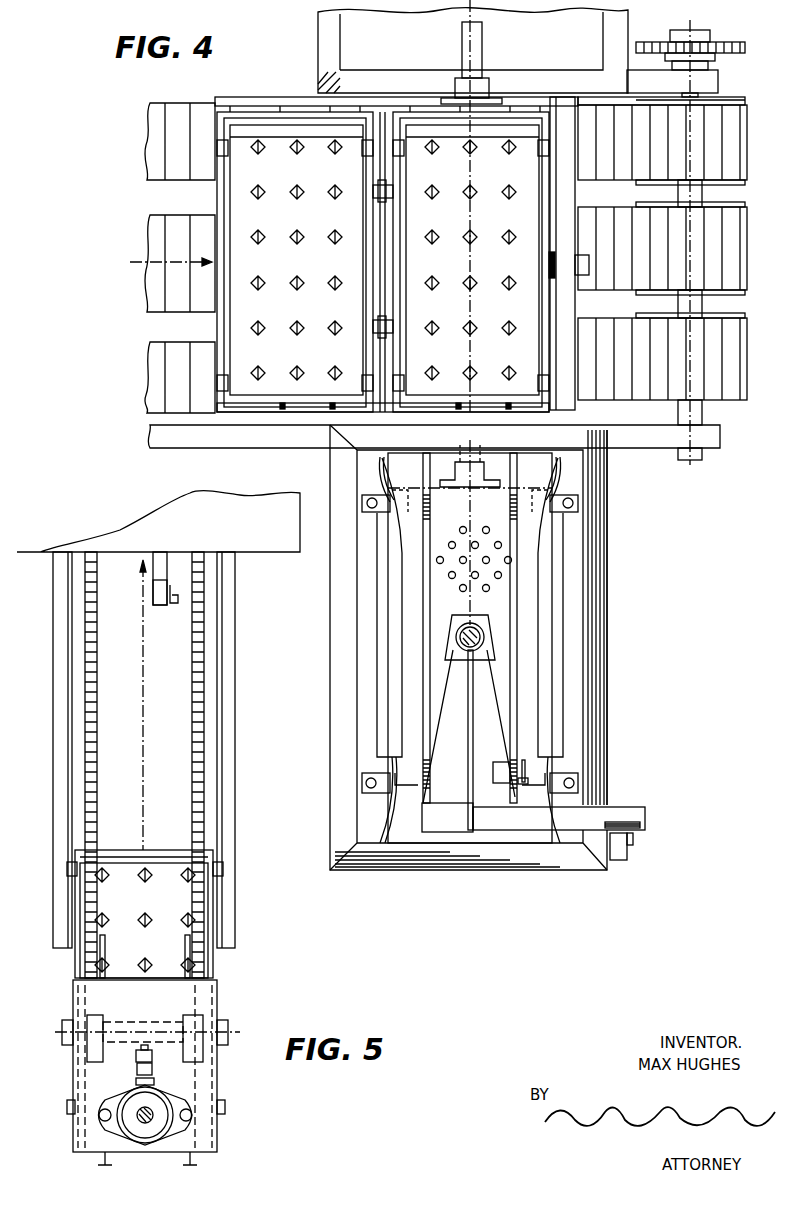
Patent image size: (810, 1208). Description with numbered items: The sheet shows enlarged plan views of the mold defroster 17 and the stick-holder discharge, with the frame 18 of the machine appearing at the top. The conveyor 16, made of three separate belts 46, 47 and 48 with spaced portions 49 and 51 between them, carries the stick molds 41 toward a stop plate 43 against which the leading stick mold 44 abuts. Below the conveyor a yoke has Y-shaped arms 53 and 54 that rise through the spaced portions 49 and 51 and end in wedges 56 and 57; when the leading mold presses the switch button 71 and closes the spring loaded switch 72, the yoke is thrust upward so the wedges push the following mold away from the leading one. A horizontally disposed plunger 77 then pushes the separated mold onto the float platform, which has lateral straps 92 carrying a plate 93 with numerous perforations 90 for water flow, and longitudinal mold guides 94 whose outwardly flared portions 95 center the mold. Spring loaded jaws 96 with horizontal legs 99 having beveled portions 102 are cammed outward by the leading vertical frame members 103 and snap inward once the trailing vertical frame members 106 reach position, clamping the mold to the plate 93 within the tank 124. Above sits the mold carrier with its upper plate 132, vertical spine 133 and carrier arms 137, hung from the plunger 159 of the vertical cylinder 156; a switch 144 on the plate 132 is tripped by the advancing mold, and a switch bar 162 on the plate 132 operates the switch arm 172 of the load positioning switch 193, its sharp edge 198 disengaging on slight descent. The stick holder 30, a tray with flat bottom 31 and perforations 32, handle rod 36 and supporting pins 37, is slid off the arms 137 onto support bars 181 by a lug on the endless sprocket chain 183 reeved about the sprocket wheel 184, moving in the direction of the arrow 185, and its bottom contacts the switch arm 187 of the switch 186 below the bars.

In FIG. 4, the conveyor 16 is at (733, 107).
In FIG. 5, the mold defroster 17 is at (672, 531).
In FIG. 4, the support block 18 is at (473, 50).
In FIG. 5, the support block 18 is at (158, 521).
In FIG. 5, the plate frame 30 is at (124, 848).
In FIG. 4, the flat bottom 31 is at (384, 260).
In FIG. 5, the flat bottom 31 is at (144, 920).
In FIG. 4, the perforations 32 is at (332, 190).
In FIG. 5, the transverse rod 36 is at (178, 856).
In FIG. 4, the mold supporting pin 37 is at (362, 372).
In FIG. 5, the mold supporting pin 37 is at (66, 868).
In FIG. 4, the stick molds 41 is at (217, 330).
In FIG. 4, the stop plate 43 is at (564, 253).
In FIG. 4, the leading stick mold 44 is at (518, 104).
In FIG. 4, the belt 46 is at (745, 148).
In FIG. 4, the belt 47 is at (745, 256).
In FIG. 4, the belt 48 is at (745, 378).
In FIG. 4, the spaced portion 49 is at (671, 193).
In FIG. 4, the spaced portion 51 is at (672, 314).
In FIG. 4, the Y-shaped arm 53 is at (372, 324).
In FIG. 4, the Y-shaped arm 54 is at (372, 198).
In FIG. 4, the wedge 56 is at (388, 320).
In FIG. 4, the wedge 57 is at (388, 192).
In FIG. 4, the switch button 71 is at (572, 252).
In FIG. 4, the spring loaded switch 72 is at (567, 254).
In FIG. 4, the plunger 77 is at (480, 60).
In FIG. 5, the perforations 90 is at (486, 526).
In FIG. 5, the lateral straps 92 is at (578, 508).
In FIG. 5, the plate 93 is at (469, 481).
In FIG. 5, the longitudinal mold guides 94 is at (362, 504).
In FIG. 5, the outwardly flared portion 95 is at (380, 462).
In FIG. 5, the spring loaded jaws 96 is at (375, 662).
In FIG. 5, the horizontal jaw leg 99 is at (377, 588).
In FIG. 5, the beveled portion 102 is at (386, 548).
In FIG. 5, the leading vertical frame members 103 is at (398, 785).
In FIG. 5, the trailing vertical frame members 106 is at (410, 498).
In FIG. 5, the tank 124 is at (610, 680).
In FIG. 5, the upper plate 132 is at (458, 783).
In FIG. 5, the vertical spine 133 is at (472, 737).
In FIG. 5, the carrier arms 137 is at (150, 940).
In FIG. 5, the switch 144 is at (502, 762).
In FIG. 5, the cylinder 156 is at (160, 1095).
In FIG. 5, the plunger 159 is at (478, 622).
In FIG. 5, the switch bar 162 is at (597, 806).
In FIG. 5, the switch arm 172 is at (635, 842).
In FIG. 5, the support bars 181 is at (52, 757).
In FIG. 5, the endless sprocket chain 183 is at (192, 728).
In FIG. 5, the sprocket wheel 184 is at (182, 1015).
In FIG. 5, the arrow 185 is at (150, 824).
In FIG. 5, the switch 186 is at (153, 605).
In FIG. 5, the switch arm 187 is at (176, 604).
In FIG. 5, the load positioning switch 193 is at (622, 860).
In FIG. 5, the sharp edge 198 is at (642, 822).